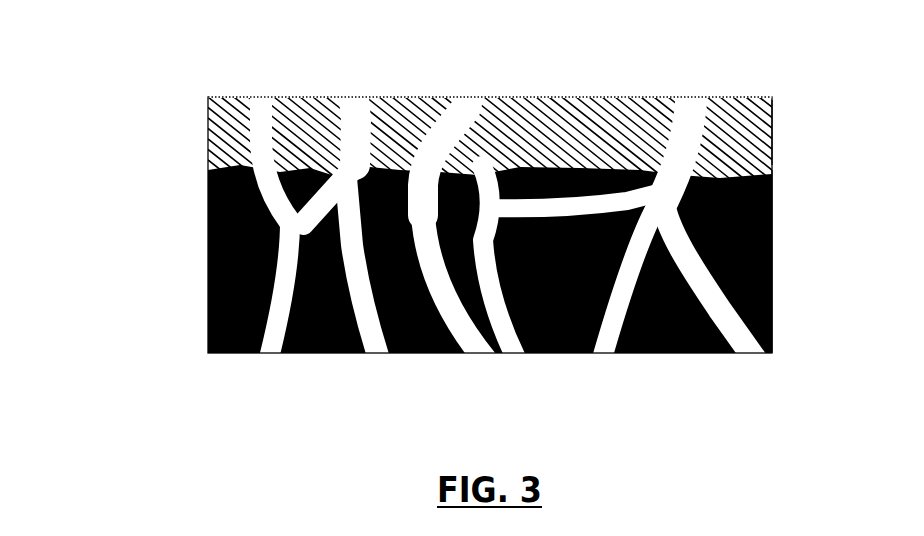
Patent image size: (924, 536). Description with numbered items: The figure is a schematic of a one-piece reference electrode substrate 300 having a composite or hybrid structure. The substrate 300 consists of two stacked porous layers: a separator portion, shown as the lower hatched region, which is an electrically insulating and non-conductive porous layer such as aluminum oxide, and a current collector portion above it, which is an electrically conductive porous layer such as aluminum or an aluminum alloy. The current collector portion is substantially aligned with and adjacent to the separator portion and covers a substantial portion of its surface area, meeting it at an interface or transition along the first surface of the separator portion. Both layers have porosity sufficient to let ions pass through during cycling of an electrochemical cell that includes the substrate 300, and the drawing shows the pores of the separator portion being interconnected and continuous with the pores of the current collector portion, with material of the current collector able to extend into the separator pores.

The one-piece reference electrode substrate 300 is at (392, 225).